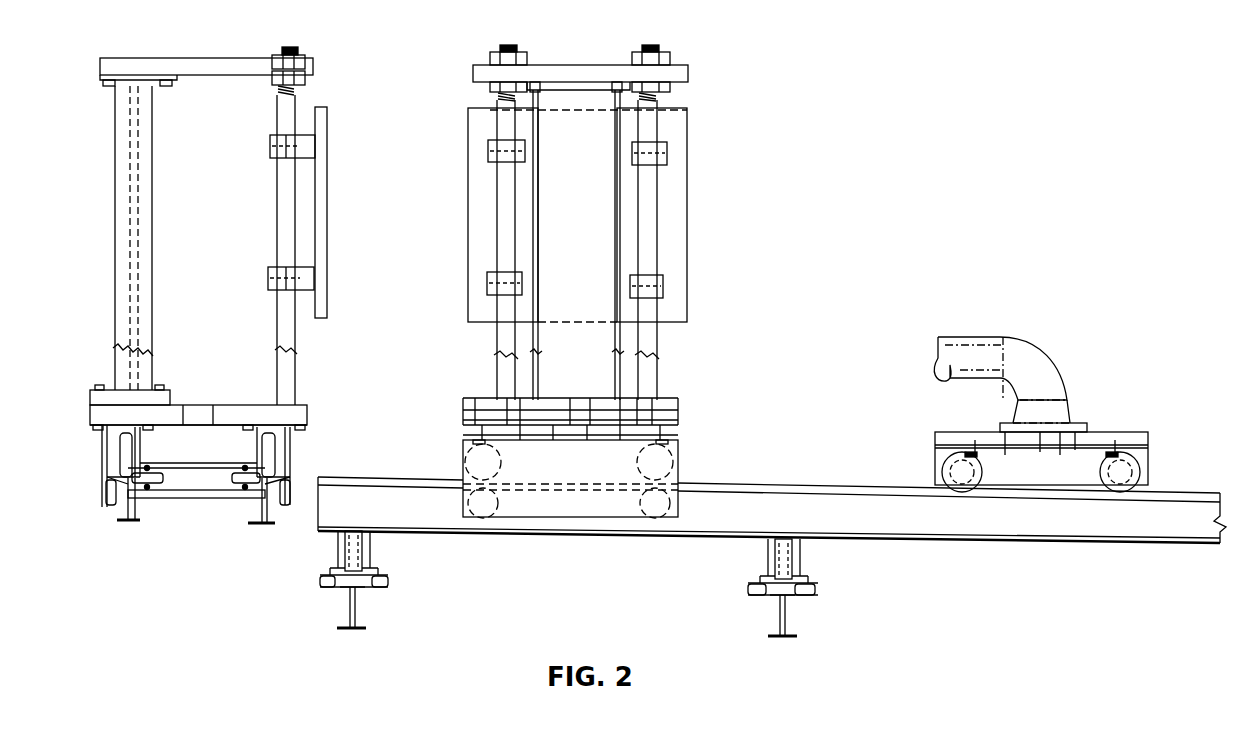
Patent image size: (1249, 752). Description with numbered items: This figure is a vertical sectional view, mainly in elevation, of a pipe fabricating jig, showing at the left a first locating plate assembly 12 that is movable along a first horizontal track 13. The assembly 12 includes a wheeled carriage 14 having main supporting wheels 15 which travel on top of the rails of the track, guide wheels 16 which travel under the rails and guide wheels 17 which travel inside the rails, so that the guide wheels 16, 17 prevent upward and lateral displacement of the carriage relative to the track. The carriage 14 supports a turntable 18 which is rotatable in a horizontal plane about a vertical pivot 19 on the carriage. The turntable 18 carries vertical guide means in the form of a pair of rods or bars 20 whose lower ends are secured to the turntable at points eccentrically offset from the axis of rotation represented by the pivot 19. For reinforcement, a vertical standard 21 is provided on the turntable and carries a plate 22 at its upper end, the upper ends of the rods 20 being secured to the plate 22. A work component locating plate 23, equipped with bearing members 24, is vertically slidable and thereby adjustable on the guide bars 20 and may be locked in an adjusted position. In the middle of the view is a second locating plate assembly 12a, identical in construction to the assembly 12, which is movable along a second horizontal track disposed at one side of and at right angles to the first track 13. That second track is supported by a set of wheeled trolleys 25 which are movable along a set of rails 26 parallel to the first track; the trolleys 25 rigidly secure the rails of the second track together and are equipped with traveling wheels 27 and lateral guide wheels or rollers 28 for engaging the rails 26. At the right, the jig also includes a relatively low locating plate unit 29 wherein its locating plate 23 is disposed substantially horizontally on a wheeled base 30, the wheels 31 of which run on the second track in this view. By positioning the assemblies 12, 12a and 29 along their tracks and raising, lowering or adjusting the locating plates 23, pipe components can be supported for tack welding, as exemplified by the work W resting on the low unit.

The first locating plate assembly 12 is at (299, 119).
The second locating plate assembly 12a is at (689, 192).
The first horizontal track 13 is at (135, 520).
The wheeled carriage 14 is at (307, 420).
The main supporting wheels 15 is at (134, 440).
The guide wheels 16 is at (108, 507).
The guide wheels 17 is at (164, 472).
The turntable 18 is at (233, 405).
The vertical pivot 19 is at (187, 405).
The guide rods or bars 20 is at (296, 363).
The vertical standard 21 is at (152, 298).
The plate 22 is at (228, 76).
The work component locating plate 23 is at (327, 203).
The bearing member 24 is at (316, 140).
The wheeled trolleys 25 is at (392, 531).
The rails 26 is at (355, 605).
The traveling wheels 27 is at (362, 550).
The lateral guide wheels or rollers 28 is at (389, 585).
The low locating plate unit 29 is at (1096, 434).
The wheeled base 30 is at (935, 462).
The wheels 31 is at (982, 470).
The work W is at (1056, 372).